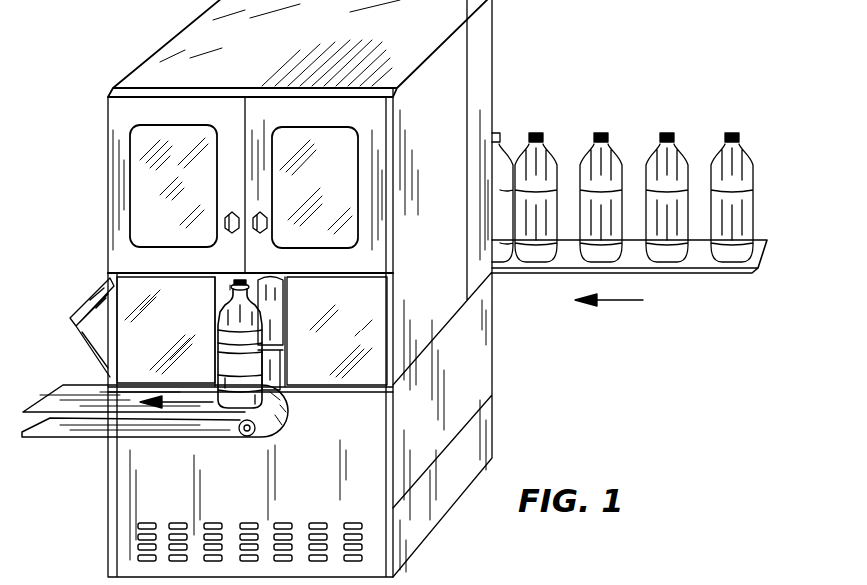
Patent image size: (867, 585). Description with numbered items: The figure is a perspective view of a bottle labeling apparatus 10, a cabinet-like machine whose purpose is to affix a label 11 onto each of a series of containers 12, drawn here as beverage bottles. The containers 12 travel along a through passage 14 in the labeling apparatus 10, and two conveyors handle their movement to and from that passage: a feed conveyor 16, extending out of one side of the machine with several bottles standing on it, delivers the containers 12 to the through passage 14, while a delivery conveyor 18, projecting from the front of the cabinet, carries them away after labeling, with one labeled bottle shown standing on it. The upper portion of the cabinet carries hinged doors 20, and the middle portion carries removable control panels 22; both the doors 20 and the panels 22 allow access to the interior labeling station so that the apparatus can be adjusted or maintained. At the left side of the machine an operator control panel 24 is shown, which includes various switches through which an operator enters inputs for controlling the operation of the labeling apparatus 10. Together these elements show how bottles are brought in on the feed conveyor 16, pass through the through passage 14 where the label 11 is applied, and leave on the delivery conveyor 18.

The labeling apparatus 10 is at (445, 300).
The label 11 is at (257, 350).
The containers 12 is at (660, 157).
The through passage 14 is at (222, 285).
The feed conveyor 16 is at (698, 253).
The delivery conveyor 18 is at (273, 412).
The hinged doors 20 is at (118, 157).
The removable control panels 22 is at (370, 365).
The operator control panel 24 is at (80, 302).